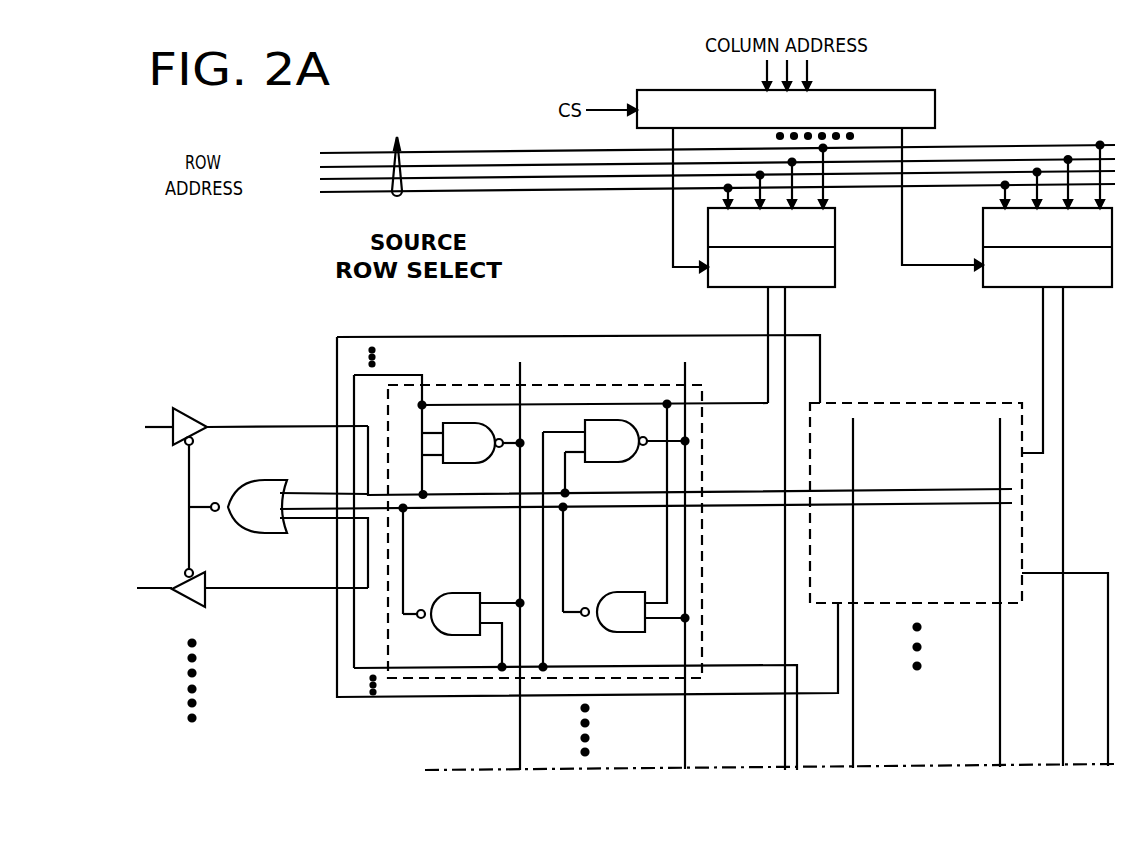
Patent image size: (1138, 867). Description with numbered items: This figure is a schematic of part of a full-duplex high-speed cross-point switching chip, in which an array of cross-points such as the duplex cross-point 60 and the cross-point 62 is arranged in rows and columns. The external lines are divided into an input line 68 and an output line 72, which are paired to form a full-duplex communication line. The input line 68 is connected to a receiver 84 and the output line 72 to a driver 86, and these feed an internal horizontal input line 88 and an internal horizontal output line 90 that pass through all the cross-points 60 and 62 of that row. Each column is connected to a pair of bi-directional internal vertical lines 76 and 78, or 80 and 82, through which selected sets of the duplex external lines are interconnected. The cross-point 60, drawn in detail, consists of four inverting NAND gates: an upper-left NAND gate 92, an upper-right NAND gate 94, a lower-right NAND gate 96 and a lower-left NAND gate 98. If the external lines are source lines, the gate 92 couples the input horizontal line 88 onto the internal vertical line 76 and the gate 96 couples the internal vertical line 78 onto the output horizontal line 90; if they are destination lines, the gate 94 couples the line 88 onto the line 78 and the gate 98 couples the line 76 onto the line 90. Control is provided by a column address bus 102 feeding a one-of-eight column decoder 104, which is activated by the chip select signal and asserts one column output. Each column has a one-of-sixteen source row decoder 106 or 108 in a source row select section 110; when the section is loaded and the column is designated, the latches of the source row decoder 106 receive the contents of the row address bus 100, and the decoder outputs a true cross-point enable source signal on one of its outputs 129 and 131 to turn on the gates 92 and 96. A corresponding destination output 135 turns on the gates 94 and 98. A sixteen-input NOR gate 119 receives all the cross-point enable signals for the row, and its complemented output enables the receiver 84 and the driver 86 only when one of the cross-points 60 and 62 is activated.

The duplex cross-point 60 is at (603, 380).
The cross-point 62 is at (918, 402).
The input line 68 is at (158, 427).
The output line 72 is at (147, 587).
The internal vertical line 76 is at (522, 752).
The internal vertical line 78 is at (685, 748).
The internal vertical line 80 is at (854, 735).
The internal vertical line 82 is at (1002, 730).
The receiver 84 is at (185, 410).
The driver 86 is at (190, 593).
The internal horizontal input line 88 is at (262, 425).
The internal horizontal output line 90 is at (237, 592).
The upper-left NAND gate 92 is at (473, 443).
The upper-right NAND gate 94 is at (616, 544).
The lower-right NAND gate 96 is at (626, 518).
The lower-left NAND gate 98 is at (463, 588).
The row address bus 100 is at (717, 150).
The column address bus 102 is at (764, 69).
The one-of-eight column decoder 104 is at (935, 90).
The source row decoder 106 is at (835, 240).
The source row decoder 108 is at (983, 237).
The source row select section 110 is at (604, 249).
The sixteen-input NOR gate 119 is at (238, 506).
The source row decoder output 129 is at (768, 302).
The source row decoder output 131 is at (787, 302).
The destination row decoder output 135 is at (797, 747).